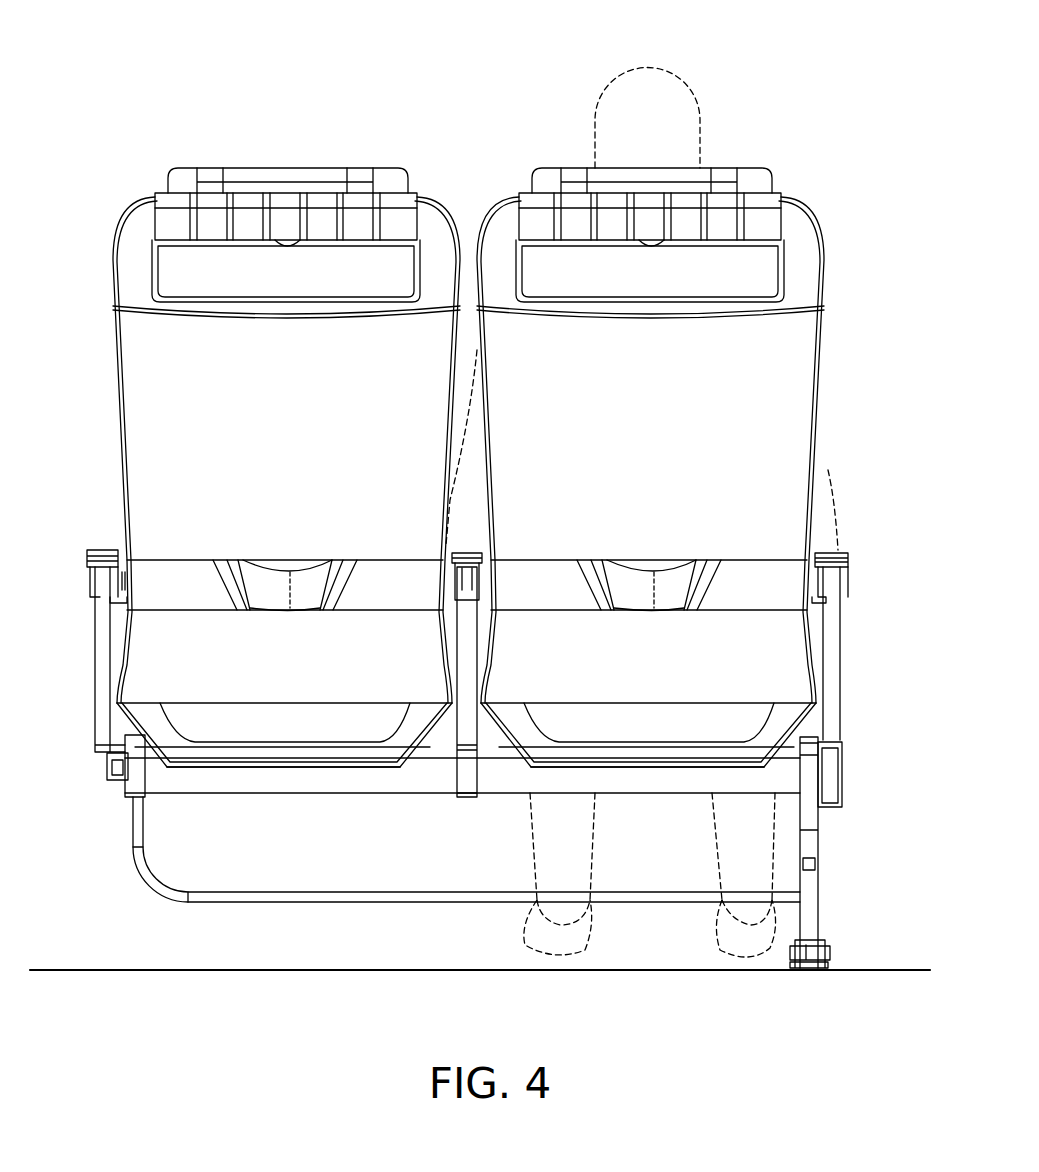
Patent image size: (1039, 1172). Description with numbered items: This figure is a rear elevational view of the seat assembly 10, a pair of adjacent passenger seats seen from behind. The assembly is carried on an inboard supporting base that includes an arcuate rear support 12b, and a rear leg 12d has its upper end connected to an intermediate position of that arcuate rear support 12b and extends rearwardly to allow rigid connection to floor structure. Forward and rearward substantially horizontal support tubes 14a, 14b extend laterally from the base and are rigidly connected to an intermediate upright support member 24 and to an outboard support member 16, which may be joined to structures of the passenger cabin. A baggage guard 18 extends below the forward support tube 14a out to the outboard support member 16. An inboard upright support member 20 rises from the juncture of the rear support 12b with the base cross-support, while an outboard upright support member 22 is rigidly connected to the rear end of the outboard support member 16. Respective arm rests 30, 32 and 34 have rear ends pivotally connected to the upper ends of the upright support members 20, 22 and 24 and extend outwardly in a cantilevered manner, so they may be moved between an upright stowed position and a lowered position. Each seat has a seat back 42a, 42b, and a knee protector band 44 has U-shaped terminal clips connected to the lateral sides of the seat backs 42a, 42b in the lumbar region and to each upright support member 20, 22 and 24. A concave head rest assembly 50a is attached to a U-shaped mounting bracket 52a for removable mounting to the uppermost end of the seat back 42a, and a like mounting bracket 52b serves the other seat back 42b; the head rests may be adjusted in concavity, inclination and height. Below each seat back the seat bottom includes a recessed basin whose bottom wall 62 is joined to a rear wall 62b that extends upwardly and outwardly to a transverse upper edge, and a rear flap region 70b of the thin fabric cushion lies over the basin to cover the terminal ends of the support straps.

The seat assembly 10 is at (478, 90).
The arcuate rear support 12b is at (820, 850).
The rear leg 12d is at (815, 942).
The forward support tube 14a is at (500, 752).
The rearward support tube 14b is at (437, 775).
The outboard support member 16 is at (107, 767).
The baggage guard 18 is at (245, 903).
The inboard upright support member 20 is at (832, 670).
The outboard upright support member 22 is at (100, 665).
The intermediate upright support member 24 is at (468, 665).
The arm rest 30 is at (833, 553).
The arm rest 32 is at (100, 550).
The arm rest 34 is at (465, 553).
The seat back 42a is at (650, 445).
The seat back 42b is at (312, 416).
The knee protector band 44 is at (182, 596).
The head rest assembly 50a is at (661, 196).
The U-shaped mounting bracket 52a is at (270, 175).
The U-shaped mounting bracket 52b is at (312, 281).
The bottom wall 62 is at (272, 758).
The rear wall 62b is at (165, 735).
The rear flap region 70b is at (305, 734).